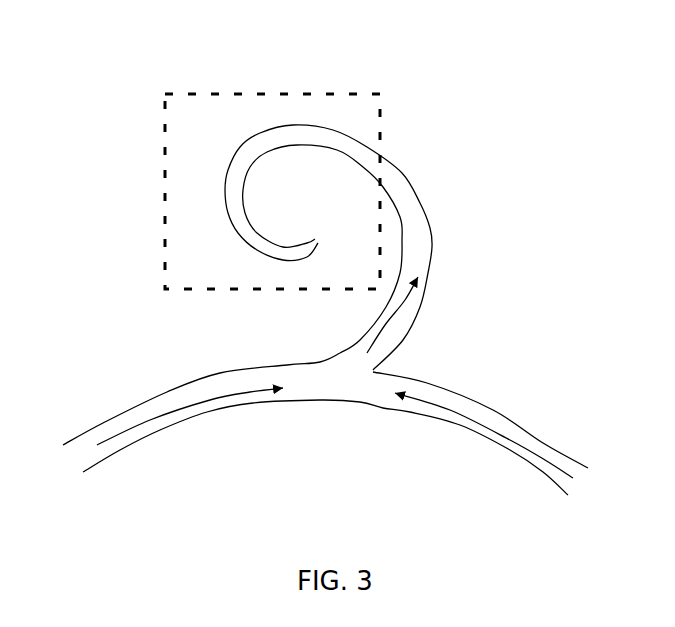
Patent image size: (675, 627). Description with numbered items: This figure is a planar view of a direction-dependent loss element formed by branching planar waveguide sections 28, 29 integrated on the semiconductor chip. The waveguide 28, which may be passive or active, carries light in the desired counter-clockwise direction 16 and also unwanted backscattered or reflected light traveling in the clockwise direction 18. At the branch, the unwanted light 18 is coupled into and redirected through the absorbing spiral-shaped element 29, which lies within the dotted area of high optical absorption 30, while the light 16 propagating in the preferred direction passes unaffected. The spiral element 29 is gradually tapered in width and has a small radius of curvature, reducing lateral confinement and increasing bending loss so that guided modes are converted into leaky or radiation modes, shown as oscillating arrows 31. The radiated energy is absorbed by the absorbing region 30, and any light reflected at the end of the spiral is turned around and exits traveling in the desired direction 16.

The CCW direction 16 is at (492, 428).
The CW direction 18 is at (200, 405).
The planar waveguide section 28 is at (75, 452).
The spiral-shaped element 29 is at (405, 173).
The absorbing region 30 is at (267, 105).
The oscillating arrows 31 is at (243, 143).